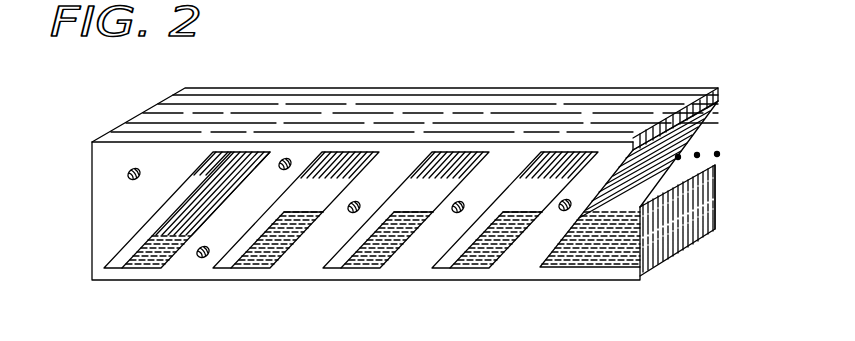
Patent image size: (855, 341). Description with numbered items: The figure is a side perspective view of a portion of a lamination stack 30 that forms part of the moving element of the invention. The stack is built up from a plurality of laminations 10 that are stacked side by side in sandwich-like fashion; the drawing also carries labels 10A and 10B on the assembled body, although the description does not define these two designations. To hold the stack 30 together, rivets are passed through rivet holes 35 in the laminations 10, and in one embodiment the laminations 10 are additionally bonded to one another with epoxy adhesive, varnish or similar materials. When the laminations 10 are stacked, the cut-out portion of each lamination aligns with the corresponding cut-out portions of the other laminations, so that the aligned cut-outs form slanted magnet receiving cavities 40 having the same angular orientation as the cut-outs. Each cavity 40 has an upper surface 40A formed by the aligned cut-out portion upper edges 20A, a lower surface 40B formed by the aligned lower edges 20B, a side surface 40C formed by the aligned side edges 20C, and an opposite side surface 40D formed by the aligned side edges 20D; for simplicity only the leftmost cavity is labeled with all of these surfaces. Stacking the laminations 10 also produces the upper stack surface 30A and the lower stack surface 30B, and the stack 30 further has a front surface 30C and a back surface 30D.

The lamination 10 is at (150, 113).
The top surface of base 10A is at (655, 90).
The front face of base 10B is at (610, 280).
The cut-out portion upper edge 20A is at (228, 155).
The cut-out portion lower edge 20B is at (140, 272).
The cut-out portion side edge 20C is at (148, 225).
The cut-out portion side edge 20D is at (220, 270).
The lamination stack 30 is at (620, 104).
The upper stack surface 30A is at (530, 116).
The lower stack surface 30B is at (680, 247).
The front surface 30C is at (528, 258).
The back surface 30D is at (717, 198).
The rivet hole 35 is at (128, 176).
The magnet receiving cavity 40 is at (278, 152).
The upper surface 40A is at (228, 155).
The lower surface 40B is at (123, 270).
The side surface 40C is at (173, 200).
The side surface 40D is at (243, 166).